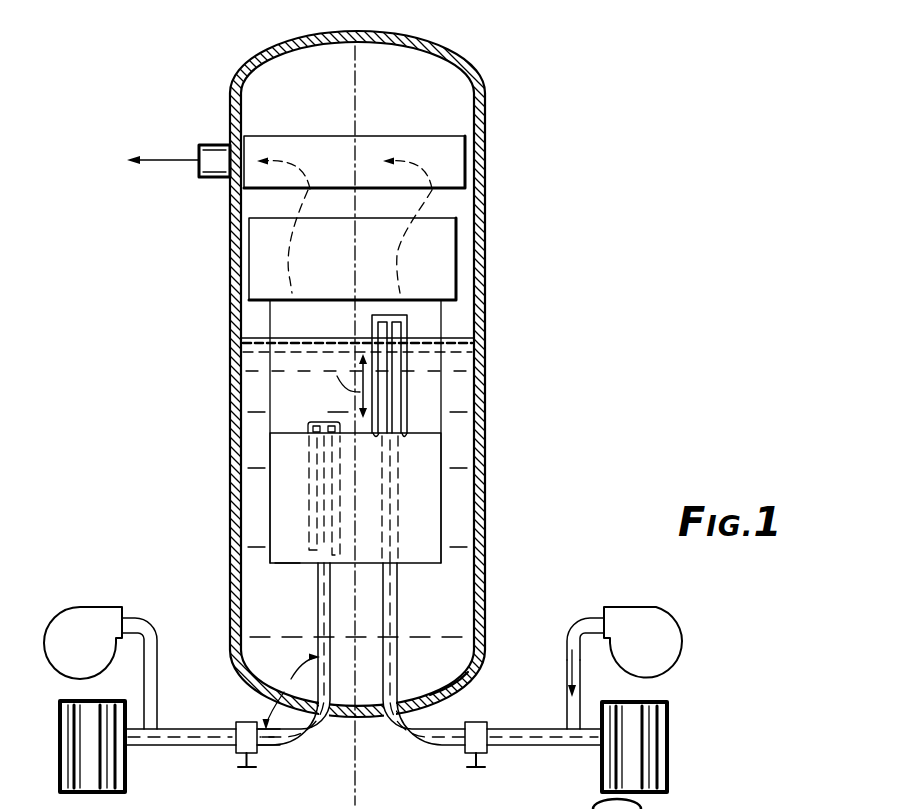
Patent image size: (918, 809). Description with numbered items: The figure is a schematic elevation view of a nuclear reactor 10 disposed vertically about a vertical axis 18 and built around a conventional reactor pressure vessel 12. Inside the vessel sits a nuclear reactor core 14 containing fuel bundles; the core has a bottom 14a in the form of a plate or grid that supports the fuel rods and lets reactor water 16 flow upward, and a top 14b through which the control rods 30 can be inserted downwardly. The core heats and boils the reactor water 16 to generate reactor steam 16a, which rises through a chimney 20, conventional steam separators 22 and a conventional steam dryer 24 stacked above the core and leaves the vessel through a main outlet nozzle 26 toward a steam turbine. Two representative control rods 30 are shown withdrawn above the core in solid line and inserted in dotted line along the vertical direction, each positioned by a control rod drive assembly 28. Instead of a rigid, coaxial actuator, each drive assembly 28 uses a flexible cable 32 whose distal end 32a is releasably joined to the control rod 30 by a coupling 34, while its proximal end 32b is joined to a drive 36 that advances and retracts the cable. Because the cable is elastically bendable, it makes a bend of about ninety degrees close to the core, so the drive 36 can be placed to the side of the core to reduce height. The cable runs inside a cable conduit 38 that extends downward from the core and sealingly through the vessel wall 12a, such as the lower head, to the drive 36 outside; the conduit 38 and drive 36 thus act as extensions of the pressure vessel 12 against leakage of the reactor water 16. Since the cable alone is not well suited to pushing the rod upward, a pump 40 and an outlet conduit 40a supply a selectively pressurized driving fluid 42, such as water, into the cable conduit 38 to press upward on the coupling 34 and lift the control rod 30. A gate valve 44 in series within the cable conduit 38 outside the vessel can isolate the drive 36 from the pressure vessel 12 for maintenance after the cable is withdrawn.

The nuclear reactor 10 is at (494, 121).
The reactor pressure vessel 12 is at (481, 418).
The vessel wall 12a is at (456, 689).
The nuclear reactor core 14 is at (421, 535).
The bottom of the core 14a is at (282, 566).
The top of the core 14b is at (344, 413).
The reactor water 16 is at (303, 323).
The reactor steam 16a is at (166, 163).
The vertical axis 18 is at (355, 73).
The chimney 20 is at (458, 375).
The steam separators 22 is at (457, 240).
The steam dryer 24 is at (466, 166).
The main outlet nozzle 26 is at (212, 145).
The control rod drive assembly 28 is at (409, 642).
The control rod 30 is at (407, 318).
The flexible cable 32 is at (400, 681).
The distal end of the cable 32a is at (421, 470).
The proximal end of the cable 32b is at (572, 746).
The coupling 34 is at (397, 462).
The drive 36 is at (133, 773).
The cable conduit 38 is at (394, 600).
The pump 40 is at (104, 582).
The outlet conduit 40a is at (566, 703).
The driving fluid 42 is at (575, 655).
The gate valve 44 is at (258, 752).